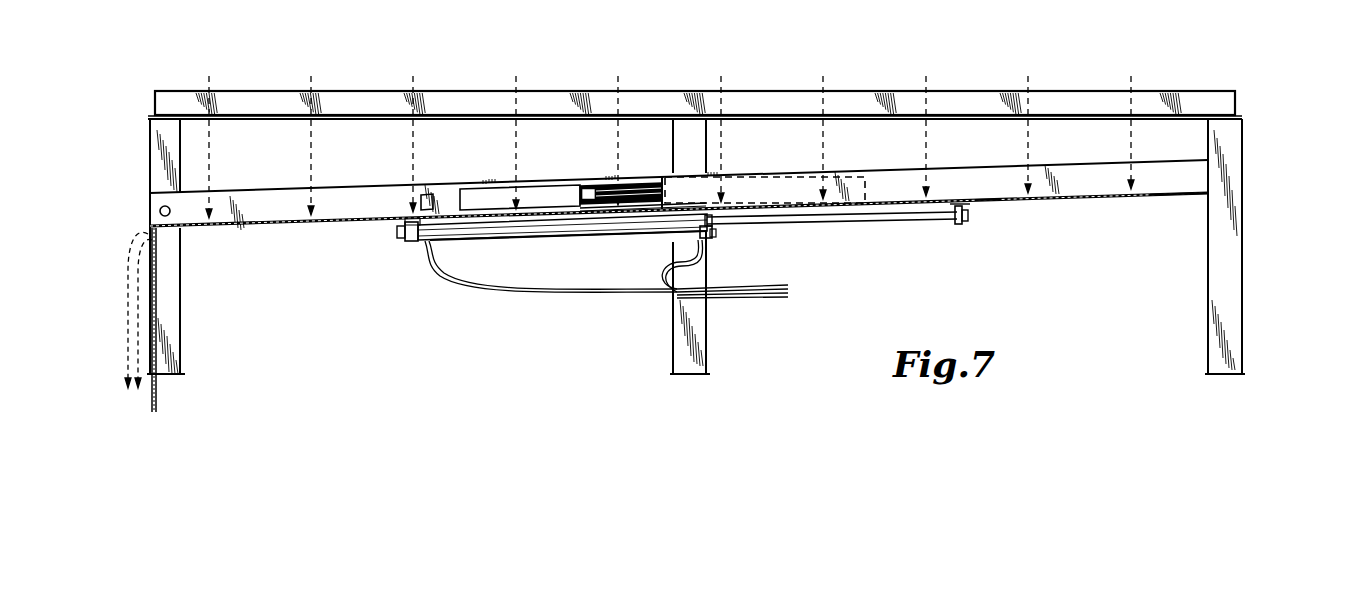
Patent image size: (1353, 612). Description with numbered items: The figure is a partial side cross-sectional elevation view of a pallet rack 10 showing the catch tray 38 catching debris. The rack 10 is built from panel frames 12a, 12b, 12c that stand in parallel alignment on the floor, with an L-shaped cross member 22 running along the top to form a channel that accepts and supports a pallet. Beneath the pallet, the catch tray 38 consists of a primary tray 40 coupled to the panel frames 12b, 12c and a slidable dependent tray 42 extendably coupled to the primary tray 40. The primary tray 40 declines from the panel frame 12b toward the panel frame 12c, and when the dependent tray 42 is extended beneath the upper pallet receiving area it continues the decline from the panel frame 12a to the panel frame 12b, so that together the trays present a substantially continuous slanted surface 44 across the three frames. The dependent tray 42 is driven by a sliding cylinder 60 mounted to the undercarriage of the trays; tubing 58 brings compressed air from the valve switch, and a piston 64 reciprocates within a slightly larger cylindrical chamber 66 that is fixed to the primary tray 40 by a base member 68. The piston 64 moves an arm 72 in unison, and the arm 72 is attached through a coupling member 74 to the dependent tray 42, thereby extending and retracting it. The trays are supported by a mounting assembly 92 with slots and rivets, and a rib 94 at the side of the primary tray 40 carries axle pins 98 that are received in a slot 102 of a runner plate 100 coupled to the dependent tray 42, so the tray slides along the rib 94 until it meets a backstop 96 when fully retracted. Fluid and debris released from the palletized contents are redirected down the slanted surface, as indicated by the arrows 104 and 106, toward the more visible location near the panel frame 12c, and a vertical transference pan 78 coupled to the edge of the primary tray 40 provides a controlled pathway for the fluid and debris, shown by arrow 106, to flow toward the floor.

The pallet rack 10 is at (1261, 76).
The cross member 22 is at (497, 90).
The panel frame 12a is at (1200, 352).
The panel frame 12b is at (667, 361).
The panel frame 12c is at (186, 334).
The catch tray 38 is at (1094, 206).
The primary tray 40 is at (283, 229).
The slidable dependent tray 42 is at (1163, 199).
The slanted surface 44 is at (988, 196).
The tubing 58 is at (777, 294).
The sliding cylinder 60 is at (497, 236).
The piston 64 is at (713, 232).
The cylindrical chamber 66 is at (583, 238).
The base member 68 is at (400, 241).
The arm 72 is at (817, 221).
The coupling member 74 is at (968, 224).
The vertical transference pan 78 is at (158, 389).
The mounting assembly 92 is at (159, 211).
The rib 94 is at (479, 198).
The backstop 96 is at (427, 195).
The axle pins 98 is at (593, 186).
The runner plate 100 is at (651, 211).
The slot 102 is at (629, 185).
The fluid and debris arrows 104 is at (1030, 77).
The fluid and debris arrow 106 is at (125, 301).